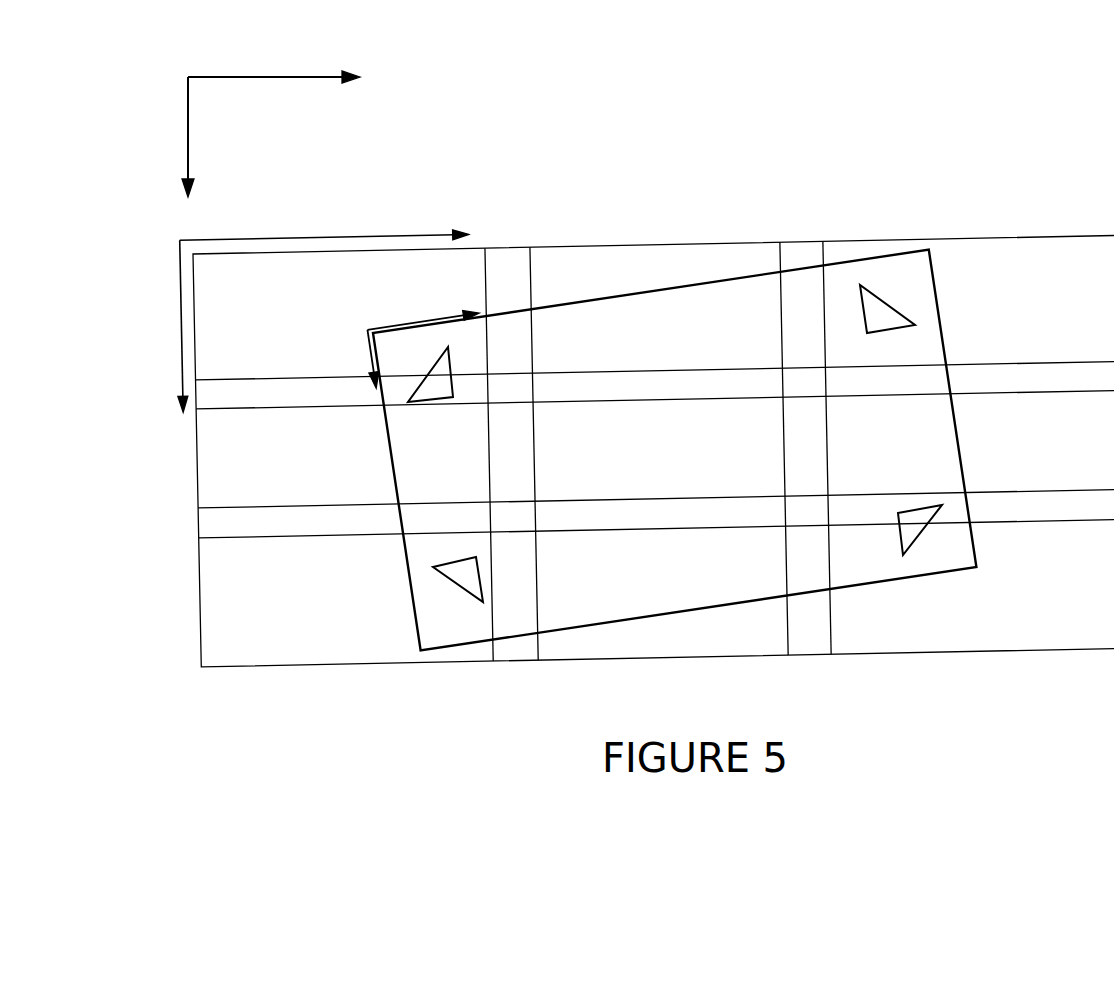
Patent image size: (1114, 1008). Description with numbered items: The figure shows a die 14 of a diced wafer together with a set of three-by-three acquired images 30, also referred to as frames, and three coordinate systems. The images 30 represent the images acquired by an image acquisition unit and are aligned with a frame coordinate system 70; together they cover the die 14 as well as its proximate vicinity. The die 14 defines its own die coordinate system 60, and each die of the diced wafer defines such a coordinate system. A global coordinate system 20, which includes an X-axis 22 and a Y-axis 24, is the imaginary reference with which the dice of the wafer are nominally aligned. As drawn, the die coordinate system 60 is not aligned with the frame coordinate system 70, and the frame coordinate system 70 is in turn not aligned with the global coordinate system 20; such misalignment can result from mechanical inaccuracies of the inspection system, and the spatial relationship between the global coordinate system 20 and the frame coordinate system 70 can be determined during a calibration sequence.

The die 14 is at (697, 611).
The global coordinate system 20 is at (252, 130).
The X-axis 22 is at (274, 60).
The Y-axis 24 is at (185, 149).
The images 30 is at (653, 451).
The die coordinate system 60 is at (394, 334).
The frame coordinate system 70 is at (338, 308).